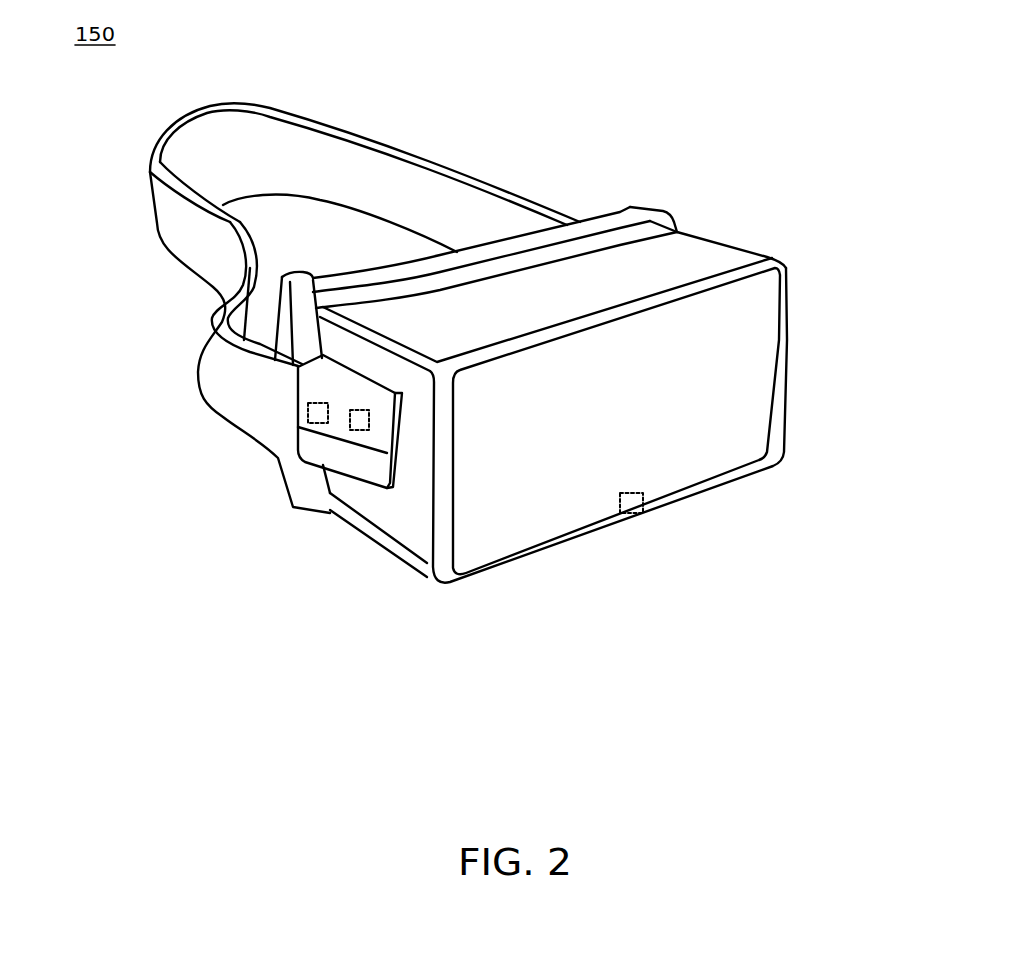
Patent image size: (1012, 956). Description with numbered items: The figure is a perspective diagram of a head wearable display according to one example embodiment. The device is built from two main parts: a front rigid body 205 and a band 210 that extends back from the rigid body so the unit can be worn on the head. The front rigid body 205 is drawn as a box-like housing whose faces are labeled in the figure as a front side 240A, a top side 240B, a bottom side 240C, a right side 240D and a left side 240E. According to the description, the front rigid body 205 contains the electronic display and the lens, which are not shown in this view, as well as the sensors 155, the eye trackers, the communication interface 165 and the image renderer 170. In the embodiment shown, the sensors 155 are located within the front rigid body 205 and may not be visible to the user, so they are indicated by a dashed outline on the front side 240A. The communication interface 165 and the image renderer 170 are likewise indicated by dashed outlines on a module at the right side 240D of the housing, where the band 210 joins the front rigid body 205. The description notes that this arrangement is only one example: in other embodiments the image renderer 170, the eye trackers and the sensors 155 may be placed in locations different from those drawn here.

The band 210 is at (478, 172).
The front rigid body 205 is at (526, 415).
The front side 240A is at (697, 445).
The top side 240B is at (402, 310).
The bottom side 240C is at (363, 550).
The right side 240D is at (406, 508).
The left side 240E is at (755, 248).
The communication interface 165 is at (300, 410).
The image renderer 170 is at (347, 438).
The sensors 155 is at (633, 509).